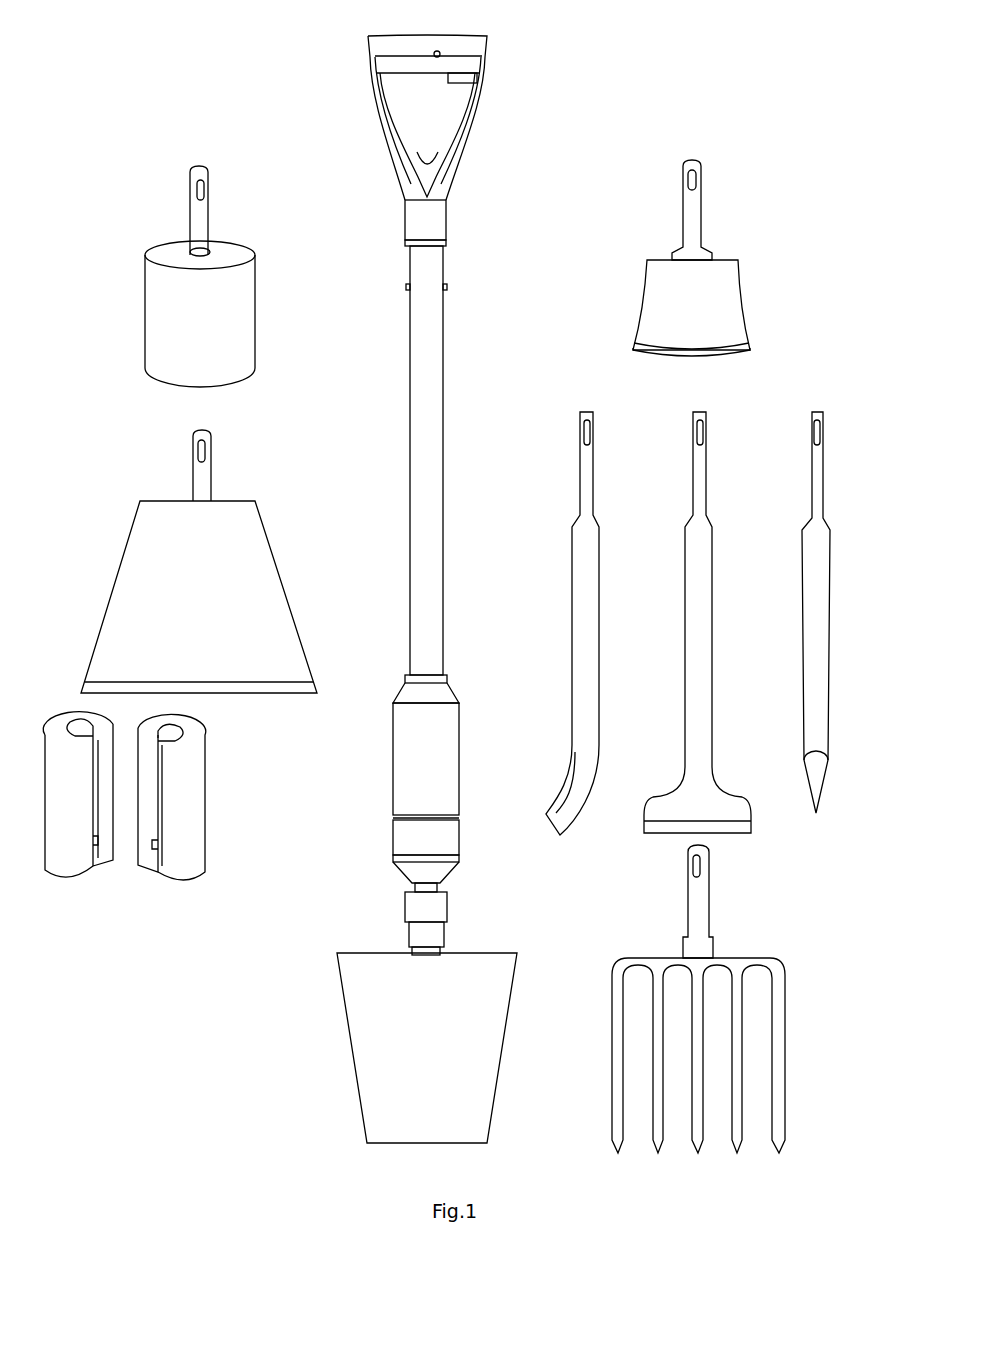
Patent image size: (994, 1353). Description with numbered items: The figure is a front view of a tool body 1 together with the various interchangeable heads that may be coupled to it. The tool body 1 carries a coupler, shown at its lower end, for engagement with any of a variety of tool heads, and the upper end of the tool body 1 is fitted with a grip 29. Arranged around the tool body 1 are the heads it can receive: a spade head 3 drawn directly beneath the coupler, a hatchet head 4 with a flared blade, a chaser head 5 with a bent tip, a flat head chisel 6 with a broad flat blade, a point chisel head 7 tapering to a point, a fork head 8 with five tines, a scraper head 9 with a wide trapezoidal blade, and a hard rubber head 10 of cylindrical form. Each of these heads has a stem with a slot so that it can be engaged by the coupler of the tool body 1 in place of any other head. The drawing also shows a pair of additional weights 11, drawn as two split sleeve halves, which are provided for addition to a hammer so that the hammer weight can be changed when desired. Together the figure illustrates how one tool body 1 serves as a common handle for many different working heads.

The tool body 1 is at (398, 300).
The D-shaped grip handle 29 is at (478, 70).
The spade head 3 is at (337, 1034).
The hatchet head 4 is at (668, 215).
The chaser head 5 is at (567, 486).
The flat head chisel 6 is at (676, 487).
The point chisel head 7 is at (794, 482).
The fork head 8 is at (720, 906).
The scraper head 9 is at (94, 616).
The hard rubber head 10 is at (135, 296).
The additional weights 11 is at (121, 892).